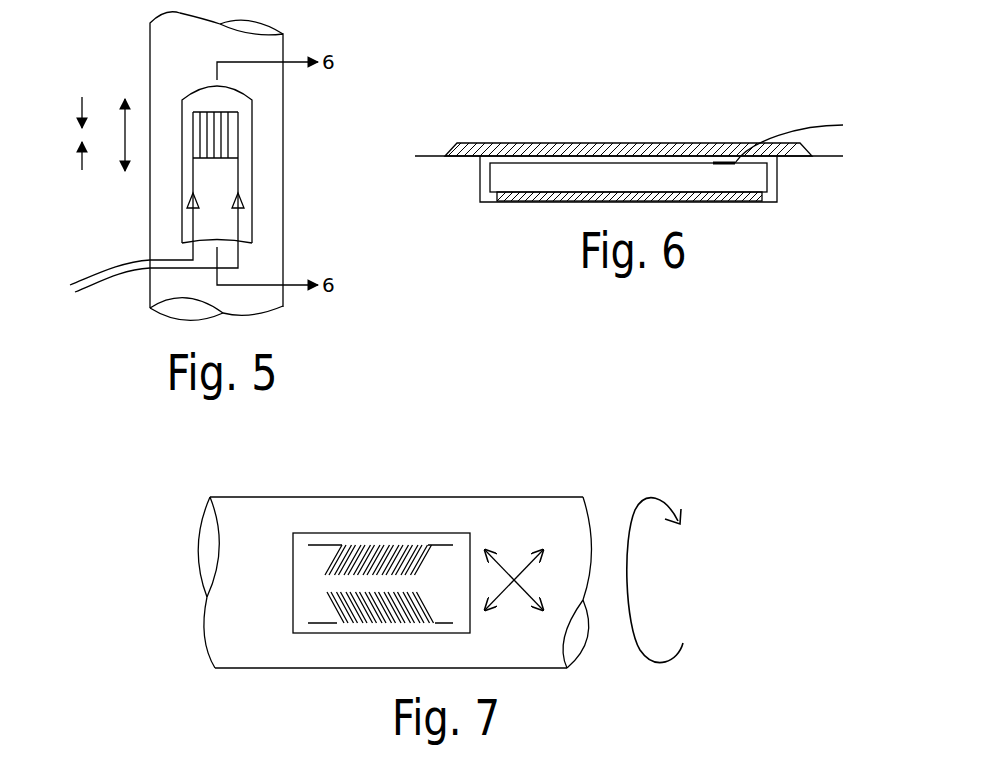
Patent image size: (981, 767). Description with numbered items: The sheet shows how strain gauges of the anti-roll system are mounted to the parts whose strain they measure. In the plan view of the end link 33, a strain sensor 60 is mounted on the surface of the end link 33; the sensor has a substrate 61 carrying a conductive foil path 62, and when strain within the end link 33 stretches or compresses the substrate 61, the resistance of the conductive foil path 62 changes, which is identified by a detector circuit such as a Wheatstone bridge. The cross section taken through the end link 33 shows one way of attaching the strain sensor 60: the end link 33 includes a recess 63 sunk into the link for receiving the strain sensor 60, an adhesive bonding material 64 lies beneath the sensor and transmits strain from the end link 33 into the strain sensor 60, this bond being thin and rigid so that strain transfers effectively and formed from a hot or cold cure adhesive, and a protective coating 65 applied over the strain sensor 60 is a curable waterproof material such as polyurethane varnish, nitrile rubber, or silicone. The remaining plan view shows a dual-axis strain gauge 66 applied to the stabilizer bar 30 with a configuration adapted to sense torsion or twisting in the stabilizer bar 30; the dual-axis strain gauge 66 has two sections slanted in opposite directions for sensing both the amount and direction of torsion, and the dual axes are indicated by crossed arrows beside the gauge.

In FIG. 7, the stabilizer bar 30 is at (316, 497).
In FIG. 5, the end link 33 is at (150, 58).
In FIG. 6, the end link 33 is at (445, 180).
In FIG. 5, the strain sensor 60 is at (258, 155).
In FIG. 6, the strain sensor 60 is at (507, 180).
In FIG. 5, the substrate 61 is at (192, 177).
In FIG. 5, the conductive foil path 62 is at (198, 112).
In FIG. 6, the recess 63 is at (770, 203).
In FIG. 6, the adhesive bonding material 64 is at (707, 197).
In FIG. 6, the protective coating 65 is at (693, 141).
In FIG. 7, the dual-axis strain gauge 66 is at (417, 533).